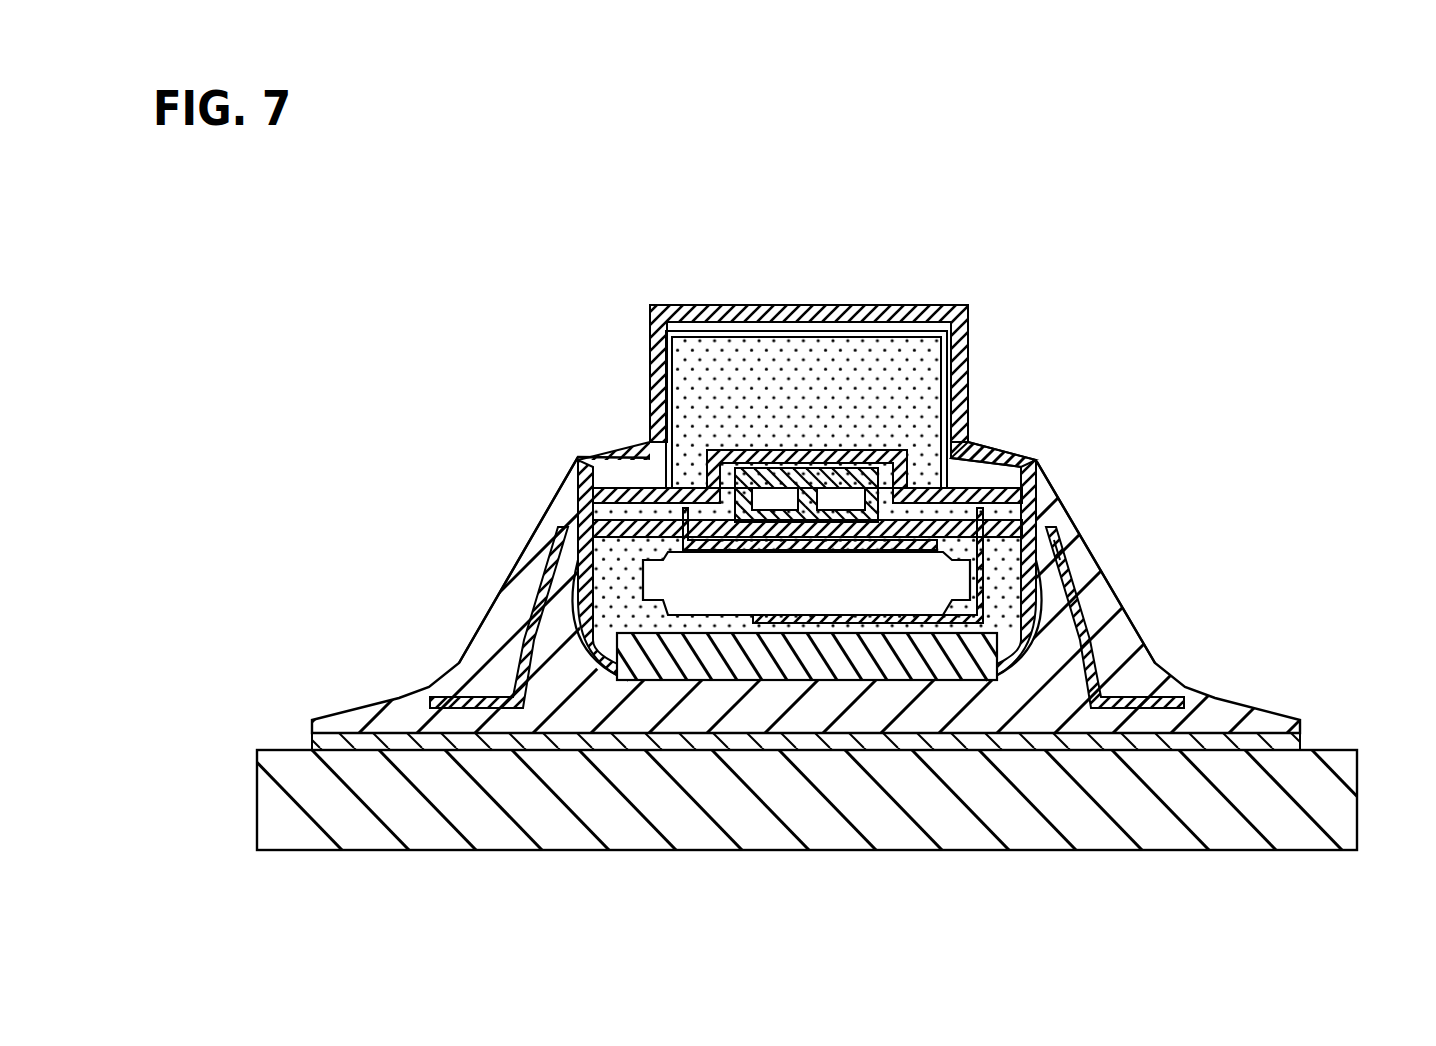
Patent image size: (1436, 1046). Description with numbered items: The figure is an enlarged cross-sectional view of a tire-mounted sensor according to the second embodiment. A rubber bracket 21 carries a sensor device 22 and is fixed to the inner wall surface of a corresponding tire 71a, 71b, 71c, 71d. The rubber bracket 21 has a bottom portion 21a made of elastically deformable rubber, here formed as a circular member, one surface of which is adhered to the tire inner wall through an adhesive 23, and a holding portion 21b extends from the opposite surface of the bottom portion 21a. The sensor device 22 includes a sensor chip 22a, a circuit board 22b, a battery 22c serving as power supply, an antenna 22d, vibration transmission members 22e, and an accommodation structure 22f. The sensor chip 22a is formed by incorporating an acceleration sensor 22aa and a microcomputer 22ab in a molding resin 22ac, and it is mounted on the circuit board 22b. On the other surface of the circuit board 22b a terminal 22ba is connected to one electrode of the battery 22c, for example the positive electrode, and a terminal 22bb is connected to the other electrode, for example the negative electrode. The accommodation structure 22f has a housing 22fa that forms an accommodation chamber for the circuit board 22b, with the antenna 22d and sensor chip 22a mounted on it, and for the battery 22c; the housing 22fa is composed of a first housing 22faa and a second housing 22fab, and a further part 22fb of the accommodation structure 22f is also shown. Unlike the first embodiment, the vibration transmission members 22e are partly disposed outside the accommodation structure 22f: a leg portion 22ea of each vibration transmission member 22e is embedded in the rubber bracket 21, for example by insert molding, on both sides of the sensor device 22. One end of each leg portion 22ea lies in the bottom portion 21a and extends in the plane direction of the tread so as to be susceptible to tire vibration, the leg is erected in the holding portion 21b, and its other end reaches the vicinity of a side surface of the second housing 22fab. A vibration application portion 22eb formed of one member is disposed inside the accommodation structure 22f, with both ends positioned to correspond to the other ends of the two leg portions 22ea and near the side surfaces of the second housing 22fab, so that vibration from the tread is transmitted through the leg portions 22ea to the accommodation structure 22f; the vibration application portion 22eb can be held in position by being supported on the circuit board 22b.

The rubber bracket 21 is at (868, 595).
The bottom portion 21a is at (1197, 697).
The holding portion 21b is at (1067, 530).
The sensor device 22 is at (984, 603).
The sensor chip 22a is at (935, 423).
The acceleration sensor 22aa is at (775, 490).
The microcomputer 22ab is at (840, 490).
The molding resin 22ac is at (865, 475).
The circuit board 22b is at (1010, 502).
The terminal 22ba is at (699, 548).
The terminal 22bb is at (968, 560).
The battery 22c is at (811, 595).
The antenna 22d is at (940, 423).
The vibration transmission member 22e is at (506, 563).
The leg portion 22ea is at (548, 568).
The vibration application portion 22eb is at (628, 477).
The accommodation structure 22f is at (1183, 575).
The housing 22fa is at (1176, 617).
The first housing 22faa is at (1037, 632).
The second housing 22fab is at (1012, 557).
The second terminal joint 22fb is at (1010, 550).
The adhesive 23 is at (1278, 744).
The tire 71a is at (827, 832).
The tire 71b is at (827, 800).
The tire 71c is at (827, 800).
The tire 71d is at (1166, 835).